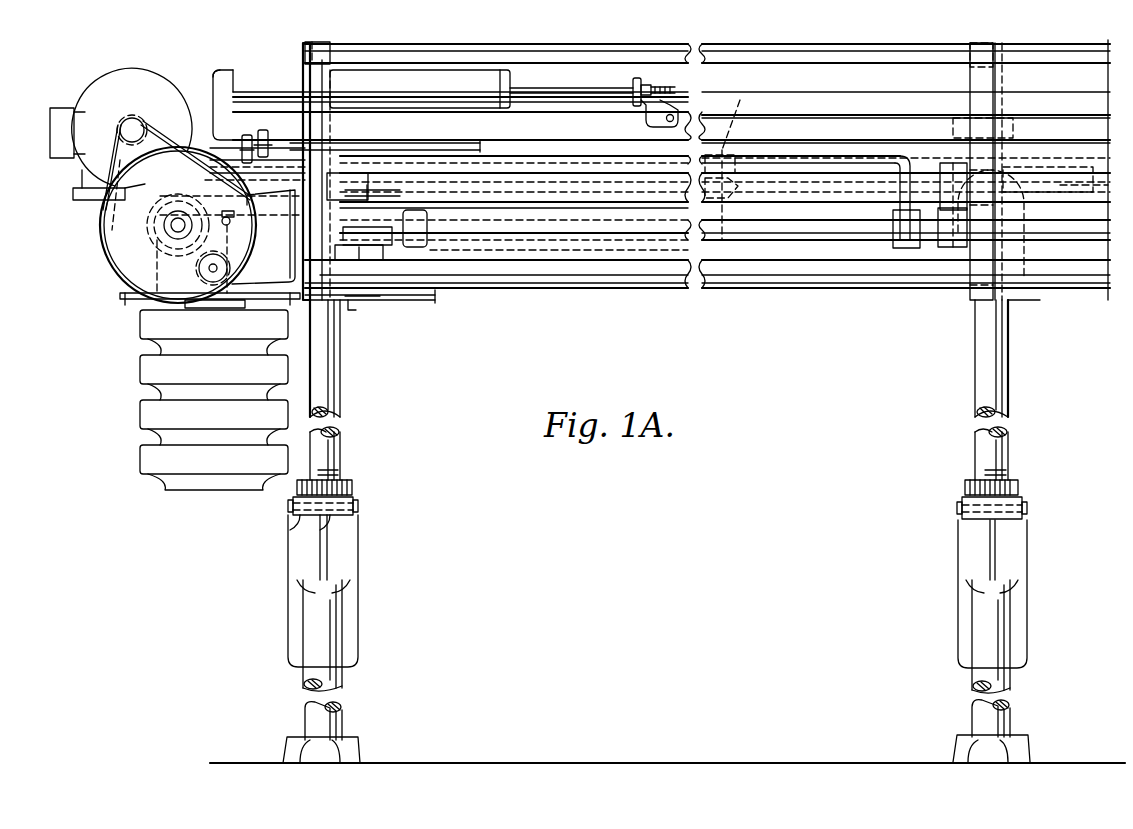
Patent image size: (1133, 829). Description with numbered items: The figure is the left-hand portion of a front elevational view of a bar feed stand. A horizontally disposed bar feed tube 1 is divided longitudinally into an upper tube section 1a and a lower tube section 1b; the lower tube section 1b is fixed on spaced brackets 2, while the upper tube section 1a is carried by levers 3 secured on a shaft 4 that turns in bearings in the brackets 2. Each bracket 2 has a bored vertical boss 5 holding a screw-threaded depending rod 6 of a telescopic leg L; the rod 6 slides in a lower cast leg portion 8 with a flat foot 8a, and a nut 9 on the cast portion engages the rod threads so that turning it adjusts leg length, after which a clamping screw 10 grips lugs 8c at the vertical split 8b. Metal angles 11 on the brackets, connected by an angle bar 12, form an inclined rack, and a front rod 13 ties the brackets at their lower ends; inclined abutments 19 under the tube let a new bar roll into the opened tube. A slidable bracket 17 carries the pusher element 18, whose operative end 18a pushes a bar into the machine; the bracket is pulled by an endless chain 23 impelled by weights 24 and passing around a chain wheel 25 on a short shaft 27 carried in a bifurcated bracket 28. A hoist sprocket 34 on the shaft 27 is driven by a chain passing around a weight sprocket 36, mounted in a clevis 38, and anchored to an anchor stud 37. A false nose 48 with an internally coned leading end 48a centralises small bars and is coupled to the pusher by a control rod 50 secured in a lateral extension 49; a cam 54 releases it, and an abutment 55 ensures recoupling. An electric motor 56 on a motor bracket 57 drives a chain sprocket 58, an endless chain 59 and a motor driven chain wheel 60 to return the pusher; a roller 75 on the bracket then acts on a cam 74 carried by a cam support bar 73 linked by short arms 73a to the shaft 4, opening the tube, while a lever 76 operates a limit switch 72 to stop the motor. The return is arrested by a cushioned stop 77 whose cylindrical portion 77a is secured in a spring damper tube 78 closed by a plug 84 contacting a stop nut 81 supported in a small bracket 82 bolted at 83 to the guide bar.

The bar feed tube 1 is at (923, 156).
The upper tube section 1a is at (1073, 185).
The lower tube section 1b is at (1066, 210).
The bracket 2 is at (318, 295).
The lever 3 is at (953, 170).
The shaft 4 is at (819, 222).
The vertical boss 5 is at (1036, 300).
The depending rod 6 is at (335, 372).
The lower cast leg portion 8 is at (342, 596).
The flat foot 8a is at (360, 748).
The vertical split 8b is at (328, 550).
The lug 8c is at (300, 525).
The nut 9 is at (352, 489).
The clamping screw 10 is at (290, 508).
The metal angle 11 is at (330, 82).
The angle bar 12 is at (305, 47).
The front rod 13 is at (575, 272).
The slidable bracket 17 is at (248, 137).
The pusher element 18 is at (400, 194).
The operative end 18a is at (641, 196).
The abutment 19 is at (1052, 170).
The endless chain 23 is at (424, 298).
The weight 24 is at (142, 330).
The chain wheel 25 is at (108, 238).
The short shaft 27 is at (170, 225).
The bifurcated bracket 28 is at (263, 237).
The hoist sprocket 34 is at (160, 250).
The weight sprocket 36 is at (198, 270).
The anchor stud 37 is at (233, 221).
The clevis 38 is at (218, 308).
The false nose 48 is at (726, 205).
The internally coned leading end 48a is at (740, 183).
The lateral extension 49 is at (741, 160).
The control rod 50 is at (745, 160).
The cam 54 is at (135, 296).
The abutment 55 is at (210, 160).
The electric motor 56 is at (106, 82).
The motor bracket 57 is at (76, 196).
The chain sprocket 58 is at (125, 118).
The endless chain 59 is at (117, 140).
The motor driven chain wheel 60 is at (120, 170).
The limit switch 72 is at (390, 246).
The cam support bar 73 is at (860, 155).
The short arm 73a is at (345, 172).
The cam 74 is at (402, 160).
The roller 75 is at (263, 140).
The lever 76 is at (427, 242).
The cushioned stop 77 is at (213, 90).
The cylindrical portion 77a is at (215, 78).
The spring damper tube 78 is at (420, 89).
The stop nut 81 is at (632, 84).
The small bracket 82 is at (650, 83).
The bolt 83 is at (676, 108).
The plug 84 is at (514, 88).
The telescopic leg L is at (342, 440).